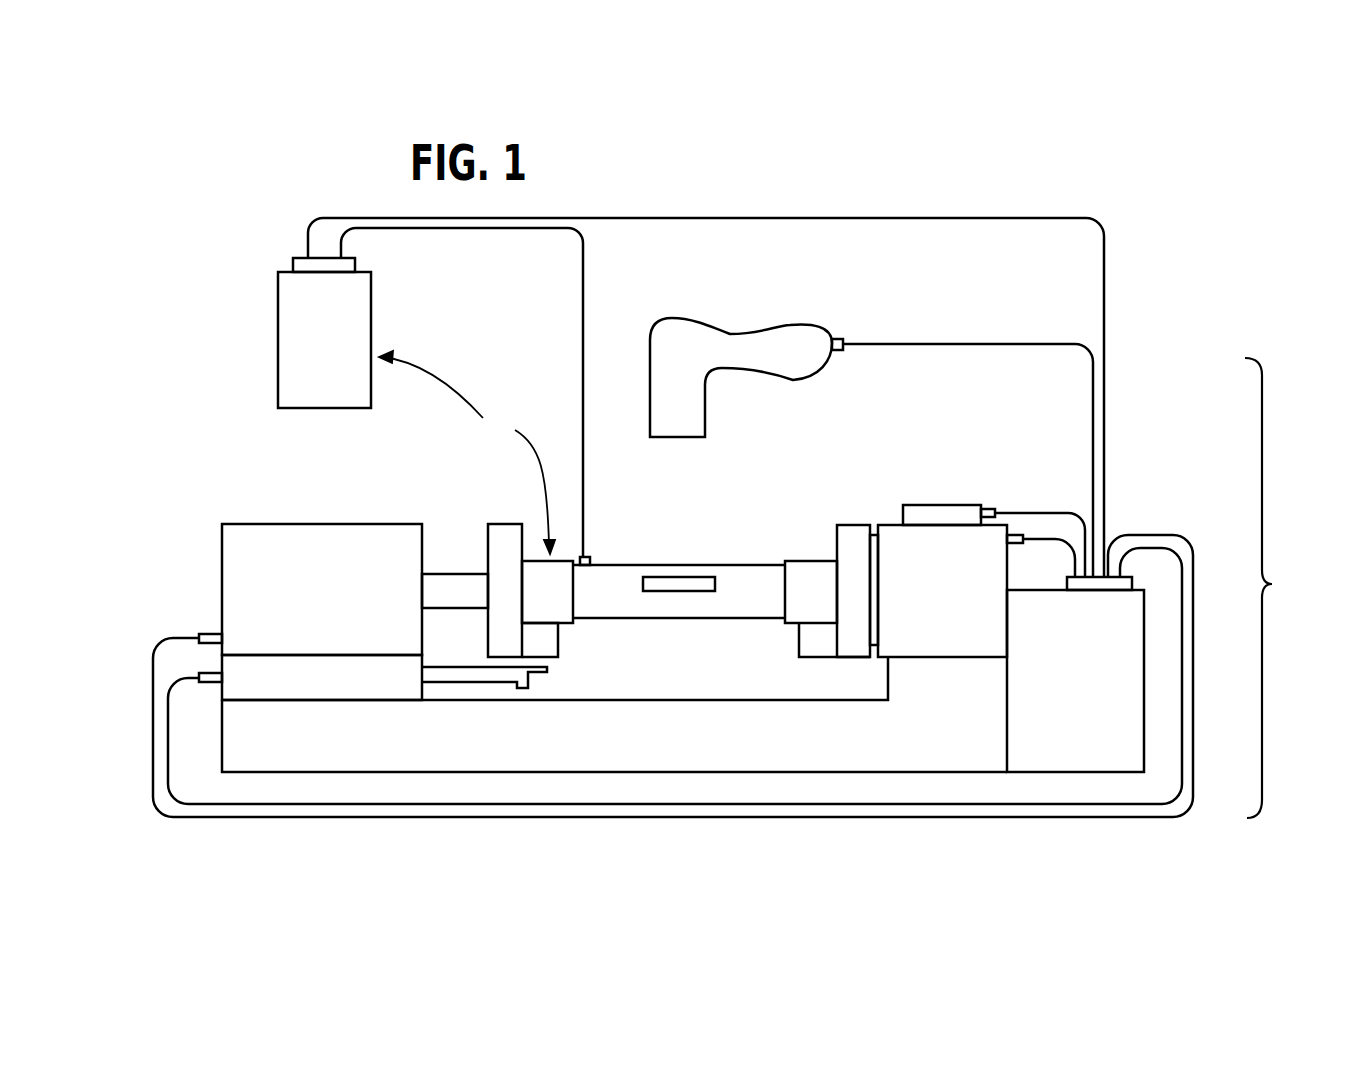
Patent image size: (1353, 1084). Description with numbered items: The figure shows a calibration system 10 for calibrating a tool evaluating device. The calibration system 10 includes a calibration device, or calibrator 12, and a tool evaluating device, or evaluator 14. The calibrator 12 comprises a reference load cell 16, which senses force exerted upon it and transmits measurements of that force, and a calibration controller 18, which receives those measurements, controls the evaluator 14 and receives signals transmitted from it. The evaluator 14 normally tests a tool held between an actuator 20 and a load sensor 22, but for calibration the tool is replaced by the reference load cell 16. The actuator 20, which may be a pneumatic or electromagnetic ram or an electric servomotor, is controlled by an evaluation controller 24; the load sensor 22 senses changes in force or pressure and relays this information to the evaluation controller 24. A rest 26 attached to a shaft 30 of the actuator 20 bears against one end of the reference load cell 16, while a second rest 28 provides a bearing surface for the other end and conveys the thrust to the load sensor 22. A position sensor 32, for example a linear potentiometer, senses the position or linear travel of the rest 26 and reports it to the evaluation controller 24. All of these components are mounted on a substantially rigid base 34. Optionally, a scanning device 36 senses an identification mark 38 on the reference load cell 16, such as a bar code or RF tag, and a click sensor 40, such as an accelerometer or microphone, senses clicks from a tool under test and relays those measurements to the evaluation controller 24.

The calibration system 10 is at (907, 174).
The calibration device 12 is at (467, 452).
The tool evaluating device 14 is at (1276, 588).
The reference load cell 16 is at (627, 592).
The calibration controller 18 is at (298, 350).
The actuator 20 is at (263, 533).
The load sensor 22 is at (910, 562).
The evaluation controller 24 is at (1130, 697).
The rest 26 is at (497, 524).
The rest 28 is at (845, 525).
The shaft 30 is at (438, 572).
The position sensor 32 is at (298, 663).
The base 34 is at (353, 736).
The scanning device 36 is at (795, 365).
The identification mark 38 is at (683, 583).
The click sensor 40 is at (940, 505).